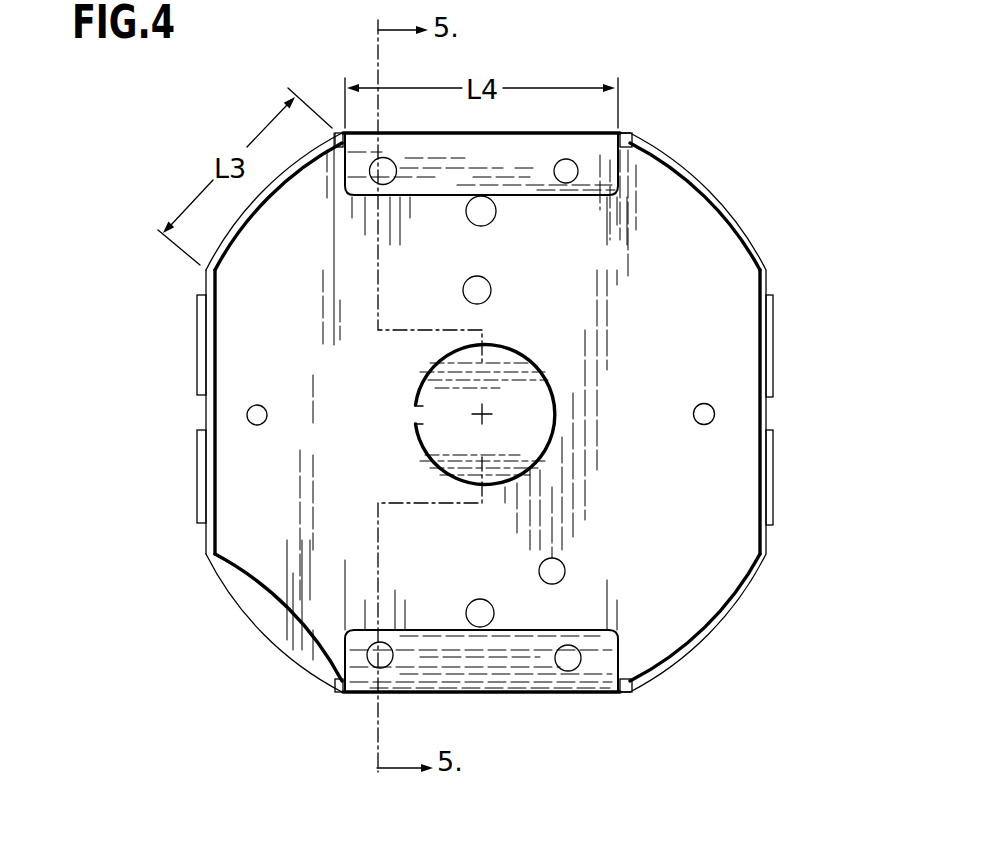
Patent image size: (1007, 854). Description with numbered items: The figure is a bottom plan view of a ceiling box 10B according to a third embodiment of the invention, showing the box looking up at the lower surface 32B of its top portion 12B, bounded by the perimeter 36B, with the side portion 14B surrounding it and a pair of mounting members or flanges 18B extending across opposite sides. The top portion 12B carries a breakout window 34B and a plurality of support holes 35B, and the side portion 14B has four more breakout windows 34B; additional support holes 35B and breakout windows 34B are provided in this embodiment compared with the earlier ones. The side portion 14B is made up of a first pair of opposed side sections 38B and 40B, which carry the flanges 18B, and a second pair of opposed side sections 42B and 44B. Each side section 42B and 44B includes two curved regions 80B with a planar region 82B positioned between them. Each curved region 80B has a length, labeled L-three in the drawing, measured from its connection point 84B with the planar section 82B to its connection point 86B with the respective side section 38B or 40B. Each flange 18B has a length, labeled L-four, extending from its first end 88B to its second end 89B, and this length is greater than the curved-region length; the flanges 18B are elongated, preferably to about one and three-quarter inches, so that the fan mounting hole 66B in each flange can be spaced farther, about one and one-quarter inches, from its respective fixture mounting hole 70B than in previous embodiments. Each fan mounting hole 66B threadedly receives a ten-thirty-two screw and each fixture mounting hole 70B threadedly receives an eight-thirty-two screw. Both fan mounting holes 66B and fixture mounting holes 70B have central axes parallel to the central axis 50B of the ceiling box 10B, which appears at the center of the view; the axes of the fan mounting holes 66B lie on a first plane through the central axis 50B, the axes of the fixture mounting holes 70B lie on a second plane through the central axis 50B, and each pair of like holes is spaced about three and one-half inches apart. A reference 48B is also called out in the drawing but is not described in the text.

The ceiling box 10B is at (164, 150).
The top portion 12B is at (729, 259).
The side portion 14B is at (203, 591).
The mounting members or flanges 18B is at (355, 195).
The lower surface 32B is at (363, 553).
The breakout window 34B is at (772, 447).
The support holes 35B is at (485, 283).
The perimeter 36B is at (203, 288).
The side section 38B is at (606, 128).
The side section 40B is at (570, 695).
The side section 42B is at (187, 480).
The side section 44B is at (779, 328).
The side wall 48B is at (263, 630).
The central axis 50B is at (488, 407).
The fan mounting hole 66B is at (383, 180).
The fixture mounting hole 70B is at (568, 160).
The curved region 80B is at (717, 190).
The planar region 82B is at (765, 535).
The connection point 84B is at (752, 268).
The connection point 86B is at (336, 128).
The first end 88B is at (335, 167).
The second end 89B is at (625, 170).